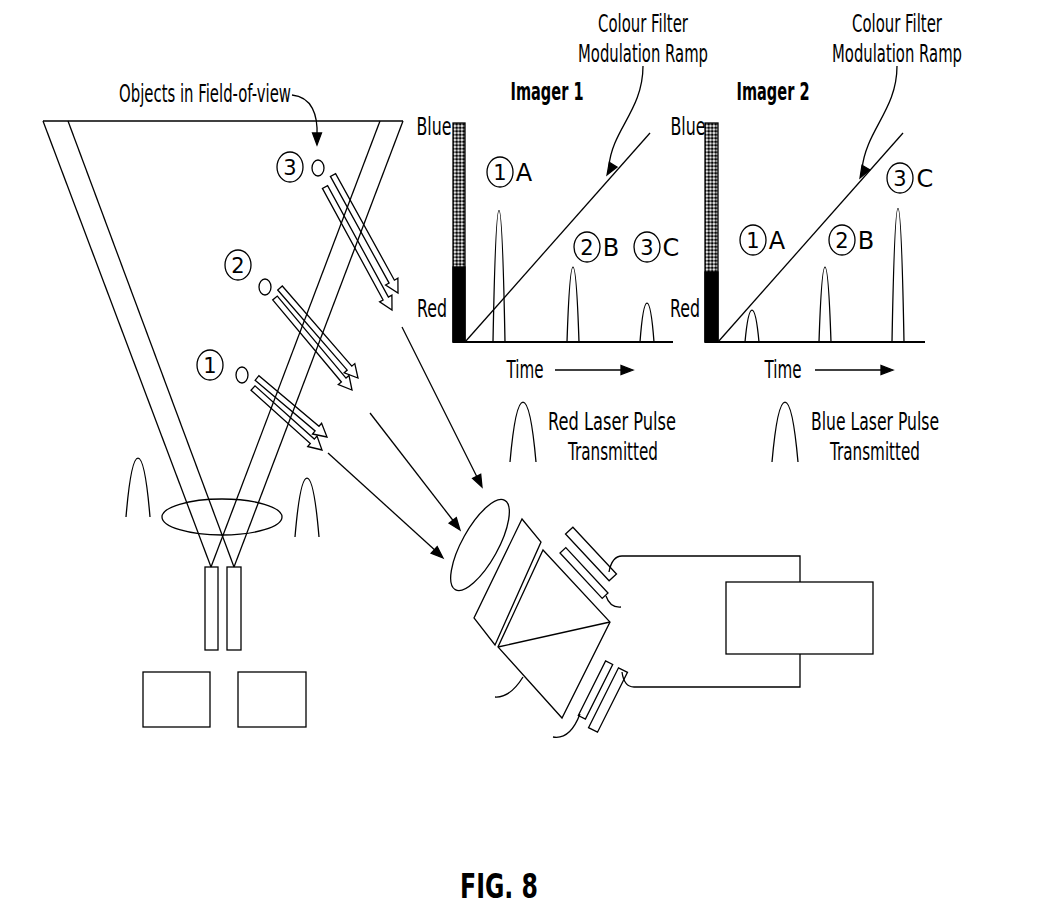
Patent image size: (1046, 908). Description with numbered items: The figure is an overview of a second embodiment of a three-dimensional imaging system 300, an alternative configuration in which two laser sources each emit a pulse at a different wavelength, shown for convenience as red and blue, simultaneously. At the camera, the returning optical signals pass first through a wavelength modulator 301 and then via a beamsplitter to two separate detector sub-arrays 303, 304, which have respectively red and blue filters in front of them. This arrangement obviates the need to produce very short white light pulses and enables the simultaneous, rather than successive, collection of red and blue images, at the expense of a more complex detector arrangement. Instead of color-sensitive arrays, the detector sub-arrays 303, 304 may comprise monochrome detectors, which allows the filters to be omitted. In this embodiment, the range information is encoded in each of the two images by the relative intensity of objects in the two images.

The system 300 is at (348, 733).
The wavelength modulator 301 is at (473, 617).
The detector sub-array 303 is at (576, 530).
The detector sub-array 304 is at (596, 735).